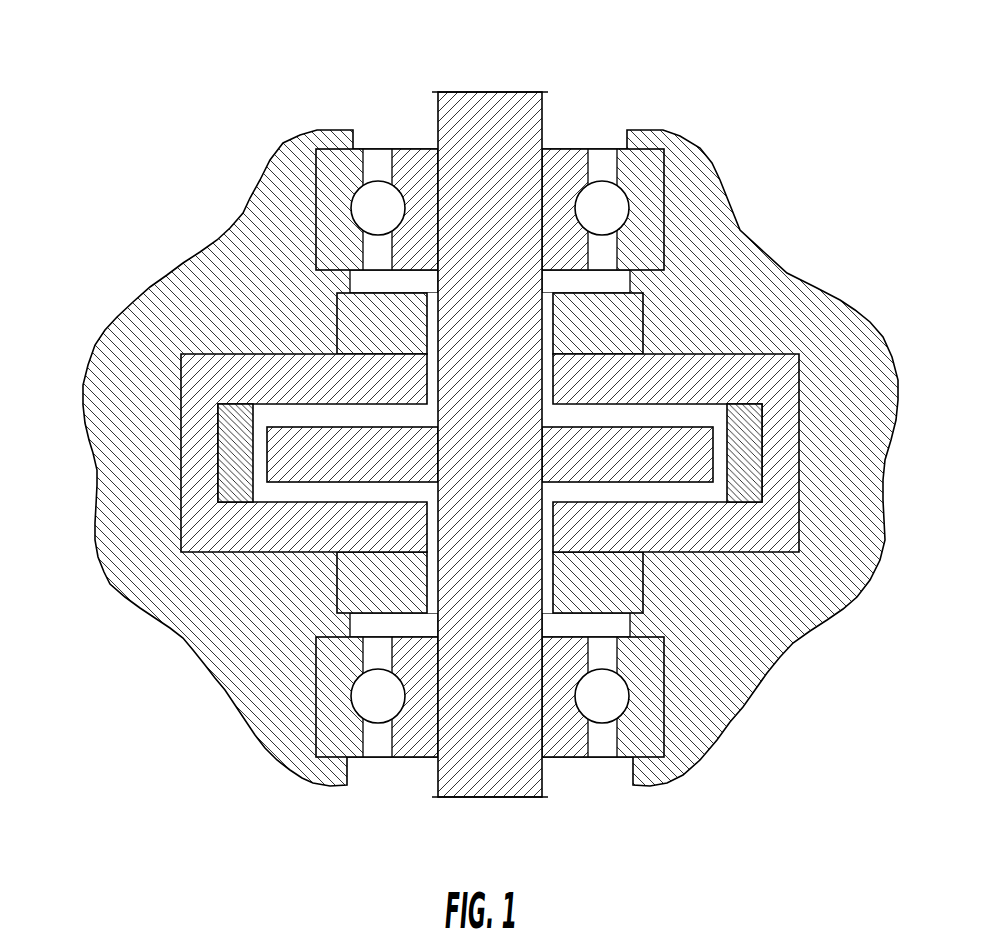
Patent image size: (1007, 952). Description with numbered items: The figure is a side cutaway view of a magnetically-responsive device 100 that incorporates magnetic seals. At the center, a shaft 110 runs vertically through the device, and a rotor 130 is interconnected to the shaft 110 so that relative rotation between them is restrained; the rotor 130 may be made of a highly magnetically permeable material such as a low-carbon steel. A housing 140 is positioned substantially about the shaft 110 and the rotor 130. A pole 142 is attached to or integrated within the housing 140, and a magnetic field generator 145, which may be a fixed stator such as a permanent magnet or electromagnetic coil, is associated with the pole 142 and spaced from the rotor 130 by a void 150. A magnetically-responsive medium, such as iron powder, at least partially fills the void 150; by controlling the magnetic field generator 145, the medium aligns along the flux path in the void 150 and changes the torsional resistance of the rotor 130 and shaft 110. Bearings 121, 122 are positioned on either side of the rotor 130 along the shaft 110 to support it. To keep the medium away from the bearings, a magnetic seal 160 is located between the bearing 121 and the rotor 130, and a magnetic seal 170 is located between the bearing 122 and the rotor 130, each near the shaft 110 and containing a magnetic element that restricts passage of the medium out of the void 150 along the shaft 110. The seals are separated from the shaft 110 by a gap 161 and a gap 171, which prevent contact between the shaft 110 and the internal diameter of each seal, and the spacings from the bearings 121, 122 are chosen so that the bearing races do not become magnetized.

The magnetically-responsive device 100 is at (190, 168).
The shaft 110 is at (477, 128).
The bearing 121 is at (378, 142).
The bearing 122 is at (380, 768).
The rotor 130 is at (302, 438).
The housing 140 is at (190, 617).
The pole 142 is at (195, 390).
The magnetic field generator 145 is at (230, 478).
The void 150 is at (323, 492).
The magnetic seal 160 is at (352, 318).
The gap 161 is at (545, 303).
The magnetic seal 170 is at (352, 590).
The gap 171 is at (548, 602).